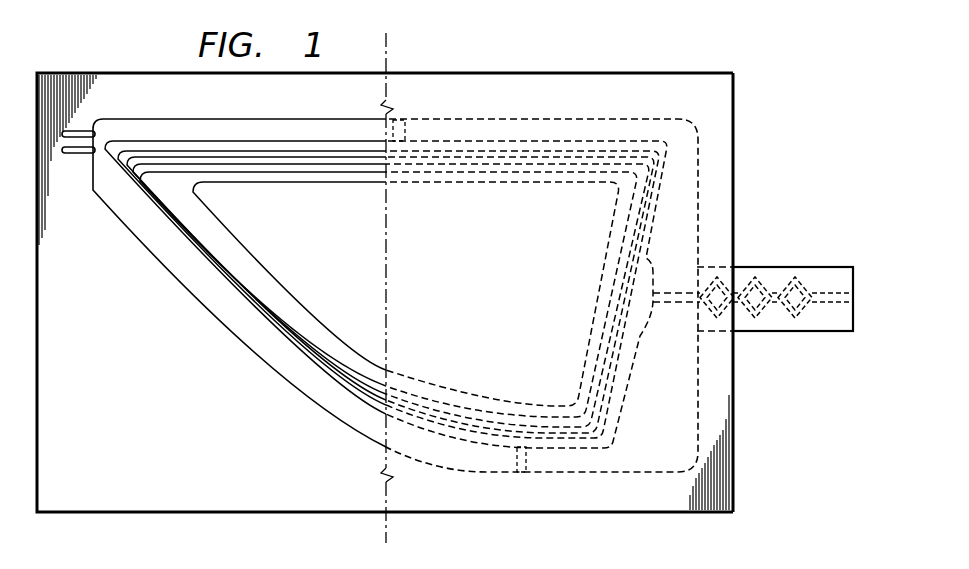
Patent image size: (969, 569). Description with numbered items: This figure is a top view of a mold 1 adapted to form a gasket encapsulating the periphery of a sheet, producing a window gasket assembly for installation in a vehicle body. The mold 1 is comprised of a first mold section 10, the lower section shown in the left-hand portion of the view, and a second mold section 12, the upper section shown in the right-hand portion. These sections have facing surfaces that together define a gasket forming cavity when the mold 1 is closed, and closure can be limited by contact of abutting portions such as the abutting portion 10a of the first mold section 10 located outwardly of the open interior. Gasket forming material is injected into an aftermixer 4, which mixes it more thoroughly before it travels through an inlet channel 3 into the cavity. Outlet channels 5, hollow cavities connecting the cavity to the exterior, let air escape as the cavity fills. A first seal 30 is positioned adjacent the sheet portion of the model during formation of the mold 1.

The mold 1 is at (777, 80).
The inlet channel 3 is at (675, 307).
The aftermixer 4 is at (808, 331).
The outlet channels 5 is at (402, 127).
The first mold section 10 is at (118, 470).
The abutting portion 10a is at (188, 267).
The second mold section 12 is at (577, 108).
The first seal 30 is at (296, 163).